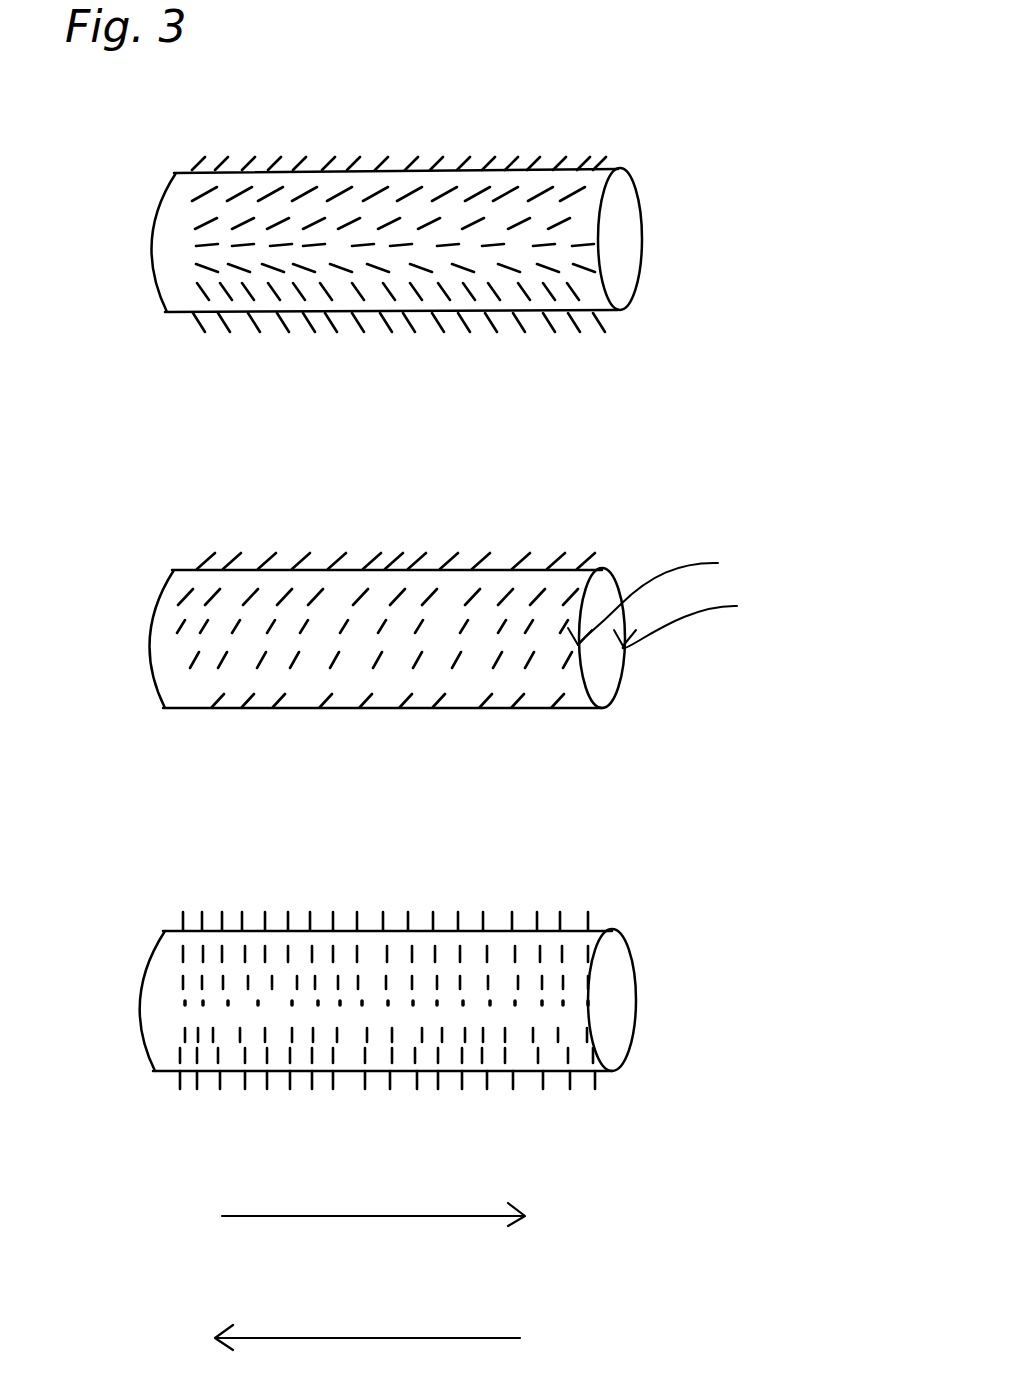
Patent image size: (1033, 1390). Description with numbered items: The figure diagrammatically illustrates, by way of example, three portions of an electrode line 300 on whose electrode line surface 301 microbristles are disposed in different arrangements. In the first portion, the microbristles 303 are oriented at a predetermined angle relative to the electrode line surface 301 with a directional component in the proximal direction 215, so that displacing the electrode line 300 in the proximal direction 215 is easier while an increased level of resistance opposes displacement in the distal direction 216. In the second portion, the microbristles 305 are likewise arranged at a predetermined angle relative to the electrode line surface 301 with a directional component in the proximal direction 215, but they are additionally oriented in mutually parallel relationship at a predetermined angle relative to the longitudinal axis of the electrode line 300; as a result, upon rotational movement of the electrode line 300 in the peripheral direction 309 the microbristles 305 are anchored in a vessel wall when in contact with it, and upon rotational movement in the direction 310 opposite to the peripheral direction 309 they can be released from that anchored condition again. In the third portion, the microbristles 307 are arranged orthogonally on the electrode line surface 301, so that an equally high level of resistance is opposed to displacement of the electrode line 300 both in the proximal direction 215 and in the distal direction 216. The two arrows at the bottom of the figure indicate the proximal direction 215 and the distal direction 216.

The electrode line 300 is at (668, 310).
The electrode line surface 301 is at (558, 168).
The microbristles 303 is at (474, 170).
The microbristles 305 is at (445, 571).
The microbristles 307 is at (460, 928).
The peripheral direction 309 is at (710, 617).
The direction opposite to the peripheral direction 310 is at (680, 596).
The proximal direction 215 is at (350, 1216).
The distal direction 216 is at (328, 1338).